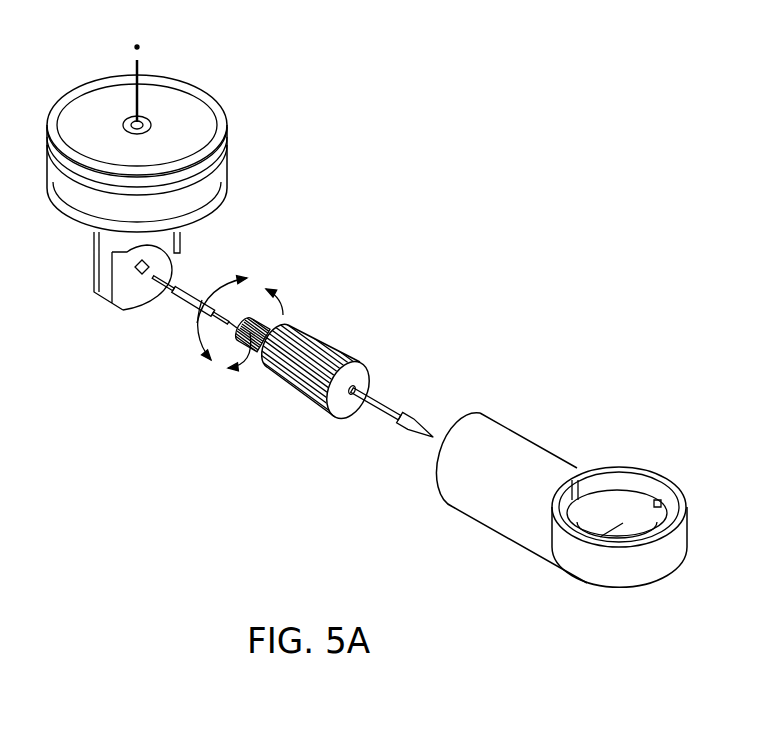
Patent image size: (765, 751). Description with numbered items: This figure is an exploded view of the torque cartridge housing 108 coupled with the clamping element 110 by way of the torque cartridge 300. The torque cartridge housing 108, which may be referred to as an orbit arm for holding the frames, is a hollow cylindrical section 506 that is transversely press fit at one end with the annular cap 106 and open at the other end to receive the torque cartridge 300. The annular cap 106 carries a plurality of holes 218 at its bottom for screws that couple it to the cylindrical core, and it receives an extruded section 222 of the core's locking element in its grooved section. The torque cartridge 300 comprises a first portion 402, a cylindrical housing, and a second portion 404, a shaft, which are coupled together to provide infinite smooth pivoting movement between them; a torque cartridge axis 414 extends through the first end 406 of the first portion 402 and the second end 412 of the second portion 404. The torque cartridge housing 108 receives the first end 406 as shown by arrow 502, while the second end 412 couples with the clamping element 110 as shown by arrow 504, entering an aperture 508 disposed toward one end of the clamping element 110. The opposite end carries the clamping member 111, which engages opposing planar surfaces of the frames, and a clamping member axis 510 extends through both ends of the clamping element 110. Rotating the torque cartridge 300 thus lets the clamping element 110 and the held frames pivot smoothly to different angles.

The annular cap 106 is at (637, 470).
The torque cartridge housing 108 is at (485, 160).
The clamping element 110 is at (130, 95).
The clamping member 111 is at (213, 152).
The plurality of holes 218 is at (657, 503).
The extruded section 222 is at (576, 477).
The torque cartridge 300 is at (275, 402).
The first portion 402 is at (317, 327).
The second portion 404 is at (278, 325).
The first end 406 is at (372, 370).
The second end 412 is at (250, 318).
The torque cartridge axis 414 is at (353, 390).
The arrow 502 is at (360, 400).
The arrow 504 is at (185, 300).
The hollow cylindrical section 506 is at (503, 440).
The aperture 508 is at (133, 276).
The clamping member axis 510 is at (137, 310).